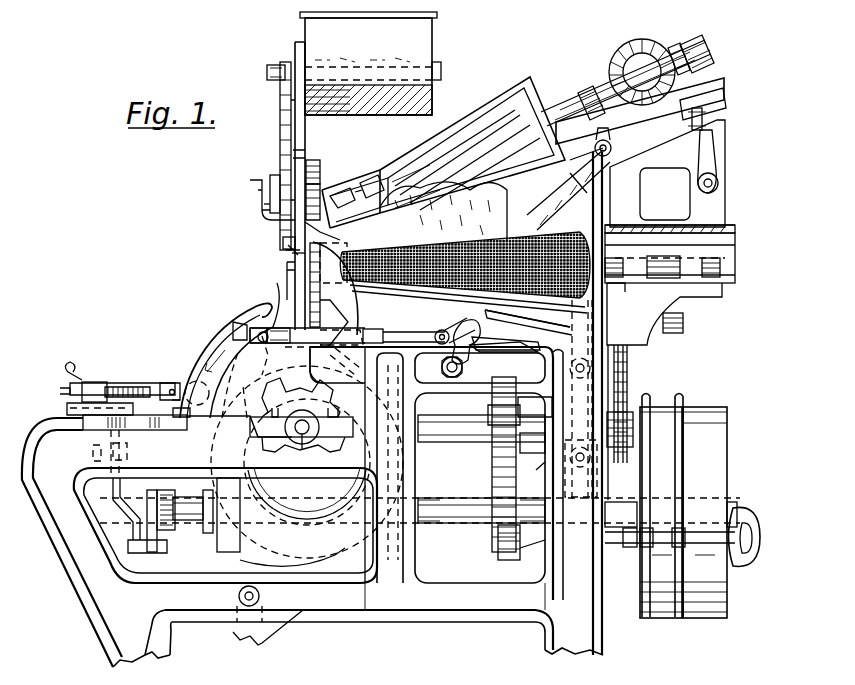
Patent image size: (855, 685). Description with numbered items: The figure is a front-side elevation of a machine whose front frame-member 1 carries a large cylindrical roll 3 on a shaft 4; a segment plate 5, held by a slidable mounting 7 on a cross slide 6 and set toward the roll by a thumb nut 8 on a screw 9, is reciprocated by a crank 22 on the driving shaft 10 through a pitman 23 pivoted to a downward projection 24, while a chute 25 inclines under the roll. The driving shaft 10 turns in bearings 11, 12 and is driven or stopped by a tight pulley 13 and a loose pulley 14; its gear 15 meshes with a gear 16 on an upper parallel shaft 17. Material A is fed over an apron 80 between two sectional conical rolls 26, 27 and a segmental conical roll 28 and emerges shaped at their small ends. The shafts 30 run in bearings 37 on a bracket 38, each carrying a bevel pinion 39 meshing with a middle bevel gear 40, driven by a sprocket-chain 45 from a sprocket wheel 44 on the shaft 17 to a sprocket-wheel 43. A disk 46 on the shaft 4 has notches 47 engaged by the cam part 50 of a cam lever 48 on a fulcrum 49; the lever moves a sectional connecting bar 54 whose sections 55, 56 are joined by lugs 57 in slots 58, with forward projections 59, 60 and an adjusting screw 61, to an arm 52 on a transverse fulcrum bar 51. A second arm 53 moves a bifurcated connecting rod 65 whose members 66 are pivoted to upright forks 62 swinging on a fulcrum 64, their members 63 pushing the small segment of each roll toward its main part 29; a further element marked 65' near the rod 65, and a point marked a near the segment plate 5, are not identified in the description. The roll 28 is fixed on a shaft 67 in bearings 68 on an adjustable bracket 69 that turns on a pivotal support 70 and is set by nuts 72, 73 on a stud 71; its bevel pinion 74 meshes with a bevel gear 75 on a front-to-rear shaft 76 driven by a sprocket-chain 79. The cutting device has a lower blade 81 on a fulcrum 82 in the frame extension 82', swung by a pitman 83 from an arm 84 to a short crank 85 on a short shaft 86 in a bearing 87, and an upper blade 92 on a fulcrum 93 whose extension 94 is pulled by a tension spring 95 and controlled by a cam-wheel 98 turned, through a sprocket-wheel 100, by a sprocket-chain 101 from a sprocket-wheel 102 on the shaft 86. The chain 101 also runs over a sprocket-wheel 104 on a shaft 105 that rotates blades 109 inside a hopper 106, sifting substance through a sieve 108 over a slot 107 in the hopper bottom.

The front frame-member 1 is at (75, 598).
The cylindrical roll 3 is at (304, 515).
The shaft 4 is at (302, 444).
The segment plate 5 is at (210, 345).
The cross slide 6 is at (150, 430).
The slidable mounting 7 is at (125, 388).
The thumb nut 8 is at (86, 378).
The screw 9 is at (145, 386).
The driving shaft 10 is at (462, 523).
The bearing 11 is at (600, 508).
The bearing 12 is at (226, 538).
The tight pulley 13 is at (652, 618).
The loose pulley 14 is at (704, 618).
The gear 15 is at (508, 552).
The gear 16 is at (492, 460).
The parallel shaft 17 is at (455, 442).
The crank 22 is at (160, 552).
The pitman 23 is at (118, 530).
The downward projection 24 is at (92, 455).
The chute 25 is at (340, 560).
The sectional elongated conical roll 26 is at (527, 320).
The sectional elongated conical roll 27 is at (505, 235).
The segmental elongated conical roll 28 is at (532, 80).
The main part 29 is at (412, 292).
The shaft 30 is at (725, 272).
The bearings 37 is at (624, 280).
The bracket 38 is at (650, 343).
The bevel pinion 39 is at (660, 280).
The middle bevel gear 40 is at (684, 333).
The sprocket-wheel 43 is at (624, 225).
The sprocket wheel 44 is at (630, 412).
The sprocket-chain 45 is at (629, 380).
The disk 46 is at (300, 370).
The notches 47 is at (301, 415).
The cam lever 48 is at (300, 273).
The fulcrum 49 is at (238, 597).
The cam part 50 is at (241, 372).
The transverse fulcrum bar 51 is at (463, 367).
The upwardly projecting arm 52 is at (448, 324).
The upwardly projecting arm 53 is at (472, 326).
The sectional connecting bar 54 is at (388, 330).
The section 55 is at (328, 448).
The section 56 is at (336, 322).
The lugs 57 is at (326, 365).
The slots 58 is at (345, 341).
The forward projection 59 is at (287, 303).
The forward projection 60 is at (252, 318).
The adjusting screw 61 is at (245, 326).
The upright fork 62 is at (606, 215).
The fork members 63 is at (616, 284).
The fulcrum 64 is at (580, 467).
The bifurcated connecting rod 65 is at (506, 355).
The lever arm 65' is at (557, 492).
The members 66 is at (575, 375).
The shaft 67 is at (500, 140).
The bearings 68 is at (586, 90).
The adjustable bracket 69 is at (724, 88).
The transverse pivotal support 70 is at (612, 147).
The stud 71 is at (714, 132).
The nut 72 is at (682, 113).
The nut 73 is at (692, 126).
The bevel pinion 74 is at (674, 48).
The bevel gear 75 is at (636, 50).
The front-to-rear shaft 76 is at (644, 62).
The sprocket-chain 79 is at (575, 183).
The apron 80 is at (722, 228).
The lower blade 81 is at (293, 258).
The fulcrum 82 is at (267, 234).
The frame extension 82' is at (323, 177).
The pitman 83 is at (262, 200).
The arm 84 is at (262, 215).
The short crank 85 is at (272, 180).
The short shaft 86 is at (262, 192).
The bearing 87 is at (328, 195).
The upper blade 92 is at (322, 172).
The fulcrum 93 is at (334, 273).
The extension 94 is at (310, 275).
The tension spring 95 is at (331, 278).
The cam-wheel 98 is at (320, 160).
The sprocket-wheel 100 is at (298, 150).
The sprocket-chain 101 is at (280, 100).
The sprocket-wheel 102 is at (280, 170).
The sprocket-wheel 104 is at (276, 65).
The shaft 105 is at (441, 72).
The hopper 106 is at (432, 48).
The slot 107 is at (390, 115).
The sieve 108 is at (441, 100).
The blades 109 is at (372, 62).
The material A is at (495, 198).
The pivot point a is at (197, 381).